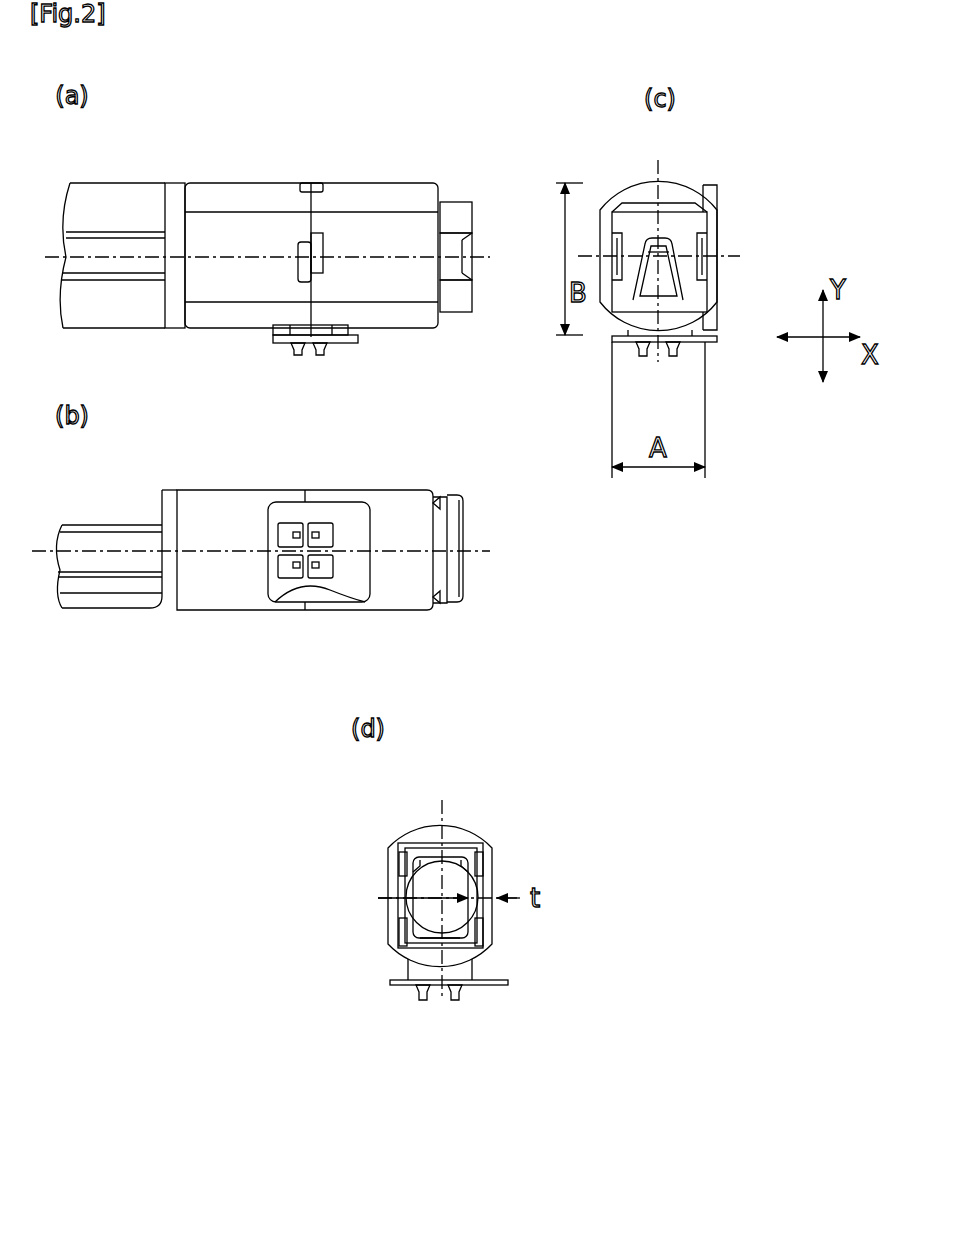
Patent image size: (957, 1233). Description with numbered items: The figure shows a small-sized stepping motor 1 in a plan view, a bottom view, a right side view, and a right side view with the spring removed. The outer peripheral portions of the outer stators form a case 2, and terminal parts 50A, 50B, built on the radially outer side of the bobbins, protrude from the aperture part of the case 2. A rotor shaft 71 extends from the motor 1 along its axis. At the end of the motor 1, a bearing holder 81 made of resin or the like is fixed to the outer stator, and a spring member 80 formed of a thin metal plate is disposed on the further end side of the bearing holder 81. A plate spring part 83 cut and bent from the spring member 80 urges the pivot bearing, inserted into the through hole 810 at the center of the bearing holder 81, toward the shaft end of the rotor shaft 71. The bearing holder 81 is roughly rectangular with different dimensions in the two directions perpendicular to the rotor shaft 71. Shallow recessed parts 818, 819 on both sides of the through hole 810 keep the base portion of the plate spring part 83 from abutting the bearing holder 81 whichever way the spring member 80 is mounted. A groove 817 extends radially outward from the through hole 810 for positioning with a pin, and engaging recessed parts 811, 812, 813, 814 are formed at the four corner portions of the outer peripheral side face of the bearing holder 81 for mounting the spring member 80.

The motor 1 is at (448, 163).
The case 2 is at (437, 158).
The rotor shaft 71 is at (114, 245).
The spring member 80 is at (472, 217).
The bearing holder 81 is at (455, 270).
The plate spring part 83 is at (668, 265).
The terminal part 50A is at (325, 572).
The terminal part 50B is at (288, 565).
The through hole 810 is at (413, 888).
The engaging recessed part 811 is at (390, 860).
The engaging recessed part 812 is at (392, 934).
The engaging recessed part 813 is at (488, 934).
The engaging recessed part 814 is at (486, 861).
The groove 817 is at (425, 860).
The recessed part 818 is at (455, 860).
The recessed part 819 is at (423, 937).